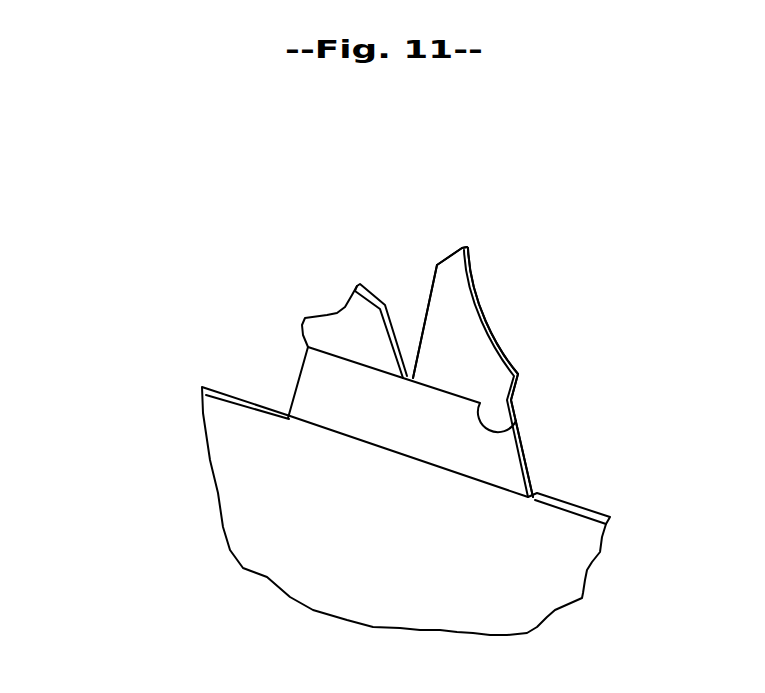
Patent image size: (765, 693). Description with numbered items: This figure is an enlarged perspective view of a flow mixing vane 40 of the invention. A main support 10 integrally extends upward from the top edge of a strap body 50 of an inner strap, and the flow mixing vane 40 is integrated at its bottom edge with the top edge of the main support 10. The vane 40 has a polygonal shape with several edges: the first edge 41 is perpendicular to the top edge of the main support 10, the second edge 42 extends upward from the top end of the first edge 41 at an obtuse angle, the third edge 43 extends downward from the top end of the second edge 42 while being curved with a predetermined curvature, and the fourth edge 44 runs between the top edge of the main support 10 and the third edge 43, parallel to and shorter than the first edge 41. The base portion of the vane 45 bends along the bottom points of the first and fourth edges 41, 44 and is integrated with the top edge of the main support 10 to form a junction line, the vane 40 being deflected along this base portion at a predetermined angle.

The main support 10 is at (307, 383).
The flow mixing vane 40 is at (333, 291).
The first edge 41 is at (432, 287).
The second edge 42 is at (451, 256).
The third edge 43 is at (480, 297).
The fourth edge 44 is at (517, 390).
The base portion of the vane 45 is at (519, 433).
The strap body 50 is at (238, 491).